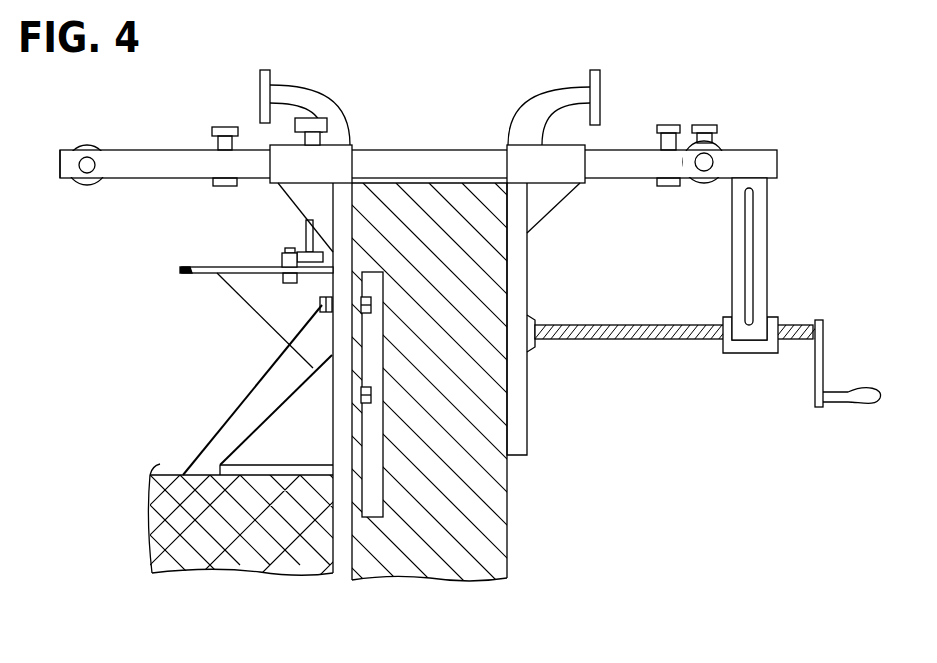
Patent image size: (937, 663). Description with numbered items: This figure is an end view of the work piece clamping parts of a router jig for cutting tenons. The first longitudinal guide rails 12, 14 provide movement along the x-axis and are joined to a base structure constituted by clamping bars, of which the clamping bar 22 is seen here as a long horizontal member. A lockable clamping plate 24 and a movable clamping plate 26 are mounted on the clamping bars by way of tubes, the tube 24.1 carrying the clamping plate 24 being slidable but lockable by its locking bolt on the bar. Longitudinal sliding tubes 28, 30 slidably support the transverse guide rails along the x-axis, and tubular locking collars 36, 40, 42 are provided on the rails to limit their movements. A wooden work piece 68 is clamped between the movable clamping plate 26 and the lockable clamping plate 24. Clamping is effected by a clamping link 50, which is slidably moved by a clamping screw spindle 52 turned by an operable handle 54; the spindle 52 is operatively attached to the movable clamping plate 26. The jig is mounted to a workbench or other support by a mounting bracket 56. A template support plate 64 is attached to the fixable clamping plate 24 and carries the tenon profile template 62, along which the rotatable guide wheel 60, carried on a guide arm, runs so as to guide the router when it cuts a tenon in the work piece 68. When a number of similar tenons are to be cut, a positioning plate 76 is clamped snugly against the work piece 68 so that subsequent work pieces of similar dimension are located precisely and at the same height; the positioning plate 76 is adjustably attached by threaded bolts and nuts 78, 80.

The first longitudinal guide rail 12 is at (80, 178).
The first longitudinal guide rail 14 is at (710, 158).
The clamping bar 22 is at (767, 165).
The clamping plate 24 is at (340, 430).
The tube 24.1 is at (312, 122).
The clamping plate 26 is at (522, 395).
The longitudinal sliding tube 28 is at (88, 145).
The longitudinal sliding tube 30 is at (702, 185).
The tubular locking collar 36 is at (704, 125).
The tubular locking collar 40 is at (220, 127).
The tubular locking collar 42 is at (660, 125).
The clamping link 50 is at (762, 228).
The clamping screw spindle 52 is at (661, 341).
The handle 54 is at (823, 355).
The mounting bracket 56 is at (268, 443).
The guide wheel 60 is at (280, 277).
The tenon profile template 62 is at (280, 258).
The template support plate 64 is at (180, 271).
The wooden work piece 68 is at (508, 511).
The positioning plate 76 is at (377, 477).
The threaded bolt and nut 78 is at (362, 395).
The threaded bolt and nut 80 is at (183, 475).